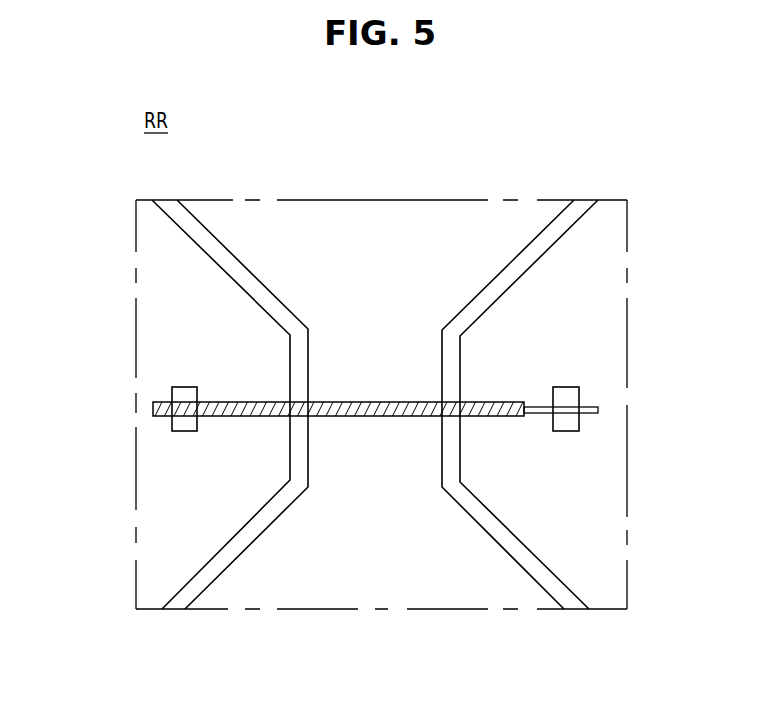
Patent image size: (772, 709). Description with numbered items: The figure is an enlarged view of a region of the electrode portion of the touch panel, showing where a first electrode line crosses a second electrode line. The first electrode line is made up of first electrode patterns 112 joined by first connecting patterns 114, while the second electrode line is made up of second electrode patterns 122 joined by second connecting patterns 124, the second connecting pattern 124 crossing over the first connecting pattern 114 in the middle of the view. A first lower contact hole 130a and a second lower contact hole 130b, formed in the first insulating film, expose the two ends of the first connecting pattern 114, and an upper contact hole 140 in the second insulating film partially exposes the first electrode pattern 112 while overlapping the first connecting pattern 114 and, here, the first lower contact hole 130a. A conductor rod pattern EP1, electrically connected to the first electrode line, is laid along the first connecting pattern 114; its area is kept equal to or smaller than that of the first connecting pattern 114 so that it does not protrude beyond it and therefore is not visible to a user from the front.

The second electrode patterns 122 is at (393, 233).
The first electrode patterns 112 is at (158, 300).
The second connecting patterns 124 is at (422, 369).
The conductor rod patterns EP1 is at (372, 416).
The first connecting patterns 114 is at (543, 412).
The first lower contact hole 130a is at (113, 407).
The upper contact hole 140 is at (178, 394).
The second lower contact hole 130b is at (567, 394).